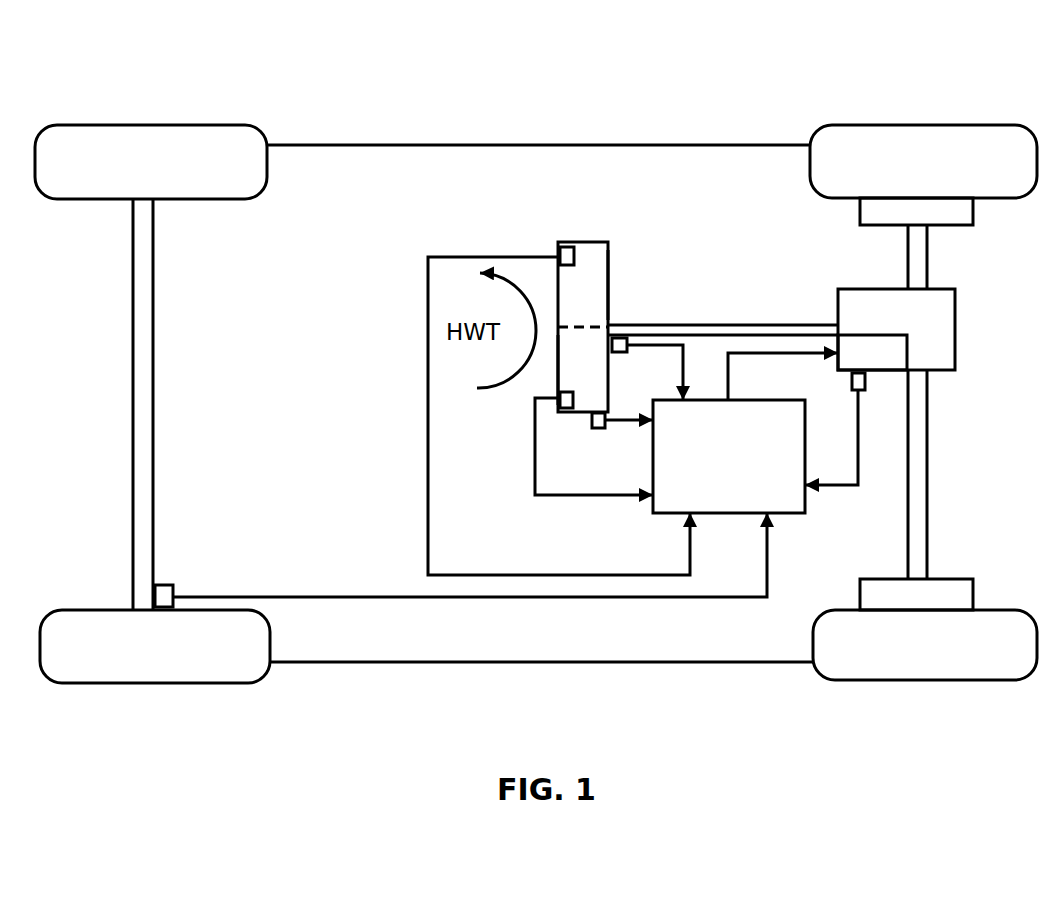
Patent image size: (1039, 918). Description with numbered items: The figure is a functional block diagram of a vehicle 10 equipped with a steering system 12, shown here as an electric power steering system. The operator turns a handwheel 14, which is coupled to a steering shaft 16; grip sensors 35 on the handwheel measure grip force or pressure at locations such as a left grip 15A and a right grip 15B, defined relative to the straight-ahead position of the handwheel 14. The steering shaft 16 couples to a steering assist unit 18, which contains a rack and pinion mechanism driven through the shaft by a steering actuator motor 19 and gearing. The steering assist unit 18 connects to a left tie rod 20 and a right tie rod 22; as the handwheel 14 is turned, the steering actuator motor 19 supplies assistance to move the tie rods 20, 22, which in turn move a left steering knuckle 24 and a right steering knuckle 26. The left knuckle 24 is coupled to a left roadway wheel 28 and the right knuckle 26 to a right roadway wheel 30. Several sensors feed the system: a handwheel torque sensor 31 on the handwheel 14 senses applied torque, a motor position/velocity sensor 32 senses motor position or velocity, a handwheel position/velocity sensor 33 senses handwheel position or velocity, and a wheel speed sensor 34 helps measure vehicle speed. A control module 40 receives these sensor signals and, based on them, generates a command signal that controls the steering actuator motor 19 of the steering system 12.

The vehicle 10 is at (578, 52).
The steering system 12 is at (689, 221).
The handwheel 14 is at (583, 242).
The left grip 15A is at (609, 291).
The right grip 15B is at (558, 373).
The steering shaft 16 is at (694, 325).
The steering assist unit 18 is at (957, 324).
The steering actuator motor 19 is at (872, 352).
The left tie rod 20 is at (928, 266).
The right tie rod 22 is at (929, 445).
The left steering knuckle 24 is at (859, 200).
The right steering knuckle 26 is at (891, 579).
The left roadway wheel 28 is at (963, 125).
The right roadway wheel 30 is at (983, 608).
The handwheel torque sensor 31 is at (617, 353).
The motor position/velocity sensor 32 is at (865, 382).
The handwheel position/velocity sensor 33 is at (604, 428).
The wheel speed sensor 34 is at (162, 585).
The grip sensor 35 is at (565, 246).
The control module 40 is at (748, 400).